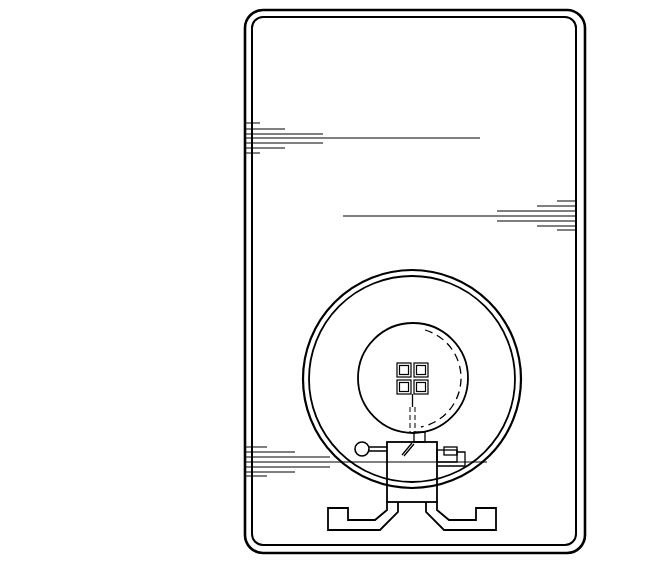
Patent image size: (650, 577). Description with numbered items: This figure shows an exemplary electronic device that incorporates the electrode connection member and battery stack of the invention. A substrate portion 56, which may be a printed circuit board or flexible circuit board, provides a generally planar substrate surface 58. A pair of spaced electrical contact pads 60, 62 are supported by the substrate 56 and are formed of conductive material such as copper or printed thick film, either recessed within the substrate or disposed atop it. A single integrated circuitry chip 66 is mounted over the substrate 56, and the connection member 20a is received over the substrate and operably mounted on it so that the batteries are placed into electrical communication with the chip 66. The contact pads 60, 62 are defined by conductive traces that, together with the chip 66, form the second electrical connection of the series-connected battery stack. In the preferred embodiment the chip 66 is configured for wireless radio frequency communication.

The substrate portion 56 is at (280, 262).
The substrate surface 58 is at (436, 93).
The connection member 20a is at (382, 320).
The contact pad 60 is at (443, 336).
The contact pad 62 is at (397, 383).
The integrated circuitry chip 66 is at (447, 490).